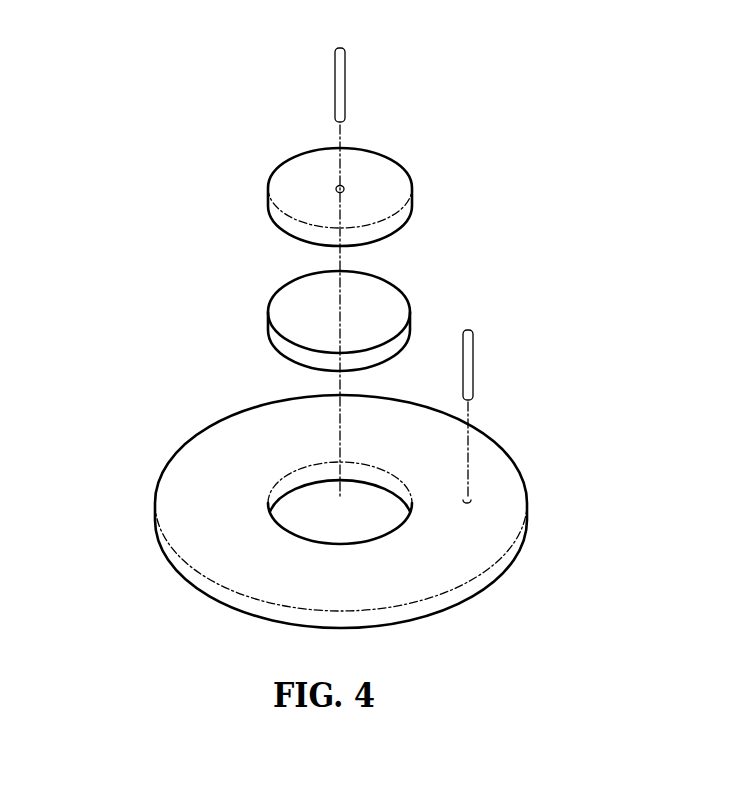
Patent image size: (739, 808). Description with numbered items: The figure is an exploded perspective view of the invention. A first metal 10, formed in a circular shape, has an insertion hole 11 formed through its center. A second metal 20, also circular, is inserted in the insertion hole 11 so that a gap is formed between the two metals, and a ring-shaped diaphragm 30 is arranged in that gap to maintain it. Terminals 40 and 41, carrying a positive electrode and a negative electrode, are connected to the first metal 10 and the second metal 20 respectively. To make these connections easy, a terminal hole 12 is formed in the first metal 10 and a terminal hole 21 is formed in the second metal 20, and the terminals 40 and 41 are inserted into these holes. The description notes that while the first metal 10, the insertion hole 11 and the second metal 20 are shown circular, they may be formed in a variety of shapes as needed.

The first metal 10 is at (167, 453).
The insertion hole 11 is at (297, 500).
The terminal hole 12 is at (468, 500).
The second metal 20 is at (405, 166).
The terminal hole 21 is at (336, 185).
The diaphragm 30 is at (393, 284).
The terminal 40 is at (477, 362).
The terminal 41 is at (346, 85).